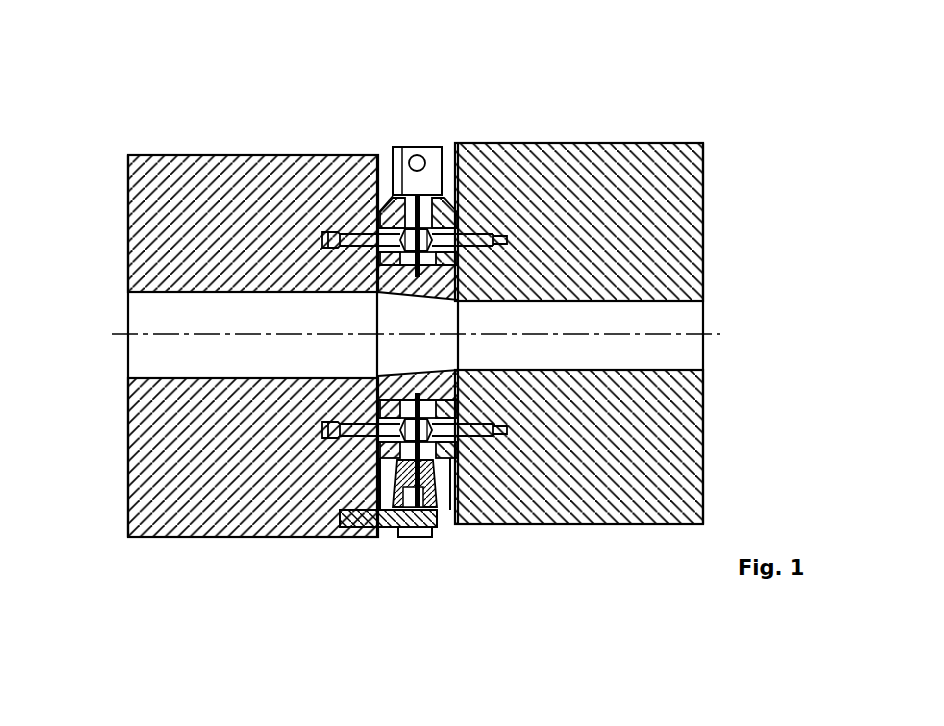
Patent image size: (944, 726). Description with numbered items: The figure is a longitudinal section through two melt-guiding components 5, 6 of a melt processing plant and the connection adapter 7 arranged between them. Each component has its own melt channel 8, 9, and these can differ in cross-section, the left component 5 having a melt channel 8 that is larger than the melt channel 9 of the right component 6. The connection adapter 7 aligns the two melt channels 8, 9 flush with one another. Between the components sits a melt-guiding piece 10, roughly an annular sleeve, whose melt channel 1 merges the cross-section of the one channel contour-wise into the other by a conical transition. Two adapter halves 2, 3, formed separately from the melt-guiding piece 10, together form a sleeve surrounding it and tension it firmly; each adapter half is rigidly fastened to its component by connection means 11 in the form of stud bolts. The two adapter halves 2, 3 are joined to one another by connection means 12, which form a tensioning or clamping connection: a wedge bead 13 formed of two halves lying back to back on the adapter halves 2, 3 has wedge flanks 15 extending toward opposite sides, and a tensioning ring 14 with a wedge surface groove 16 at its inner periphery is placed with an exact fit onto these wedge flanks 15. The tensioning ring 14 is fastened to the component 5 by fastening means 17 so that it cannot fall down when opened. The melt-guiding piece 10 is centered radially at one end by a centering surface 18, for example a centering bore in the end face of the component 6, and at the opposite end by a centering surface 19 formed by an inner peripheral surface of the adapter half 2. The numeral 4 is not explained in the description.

The melt channel 1 is at (387, 313).
The adapter half 2 is at (383, 200).
The adapter half 3 is at (452, 186).
The pin bore 4 is at (423, 168).
The melt-guiding component 5 is at (297, 178).
The melt-guiding component 6 is at (537, 185).
The connection adapter 7 is at (384, 150).
The melt channel 8 is at (142, 352).
The melt channel 9 is at (688, 359).
The melt-guiding piece 10 is at (450, 368).
The connection means 11 is at (343, 438).
The connection means 12 is at (429, 143).
The wedge bead 13 is at (404, 537).
The tensioning ring 14 is at (433, 470).
The wedge flanks 15 is at (393, 458).
The wedge surface groove 16 is at (442, 190).
The fastening means 17 is at (360, 527).
The centering surface 18 is at (463, 397).
The centering surface 19 is at (378, 405).